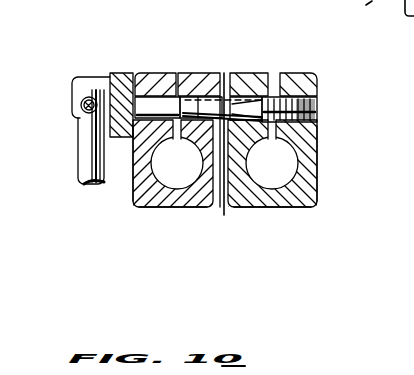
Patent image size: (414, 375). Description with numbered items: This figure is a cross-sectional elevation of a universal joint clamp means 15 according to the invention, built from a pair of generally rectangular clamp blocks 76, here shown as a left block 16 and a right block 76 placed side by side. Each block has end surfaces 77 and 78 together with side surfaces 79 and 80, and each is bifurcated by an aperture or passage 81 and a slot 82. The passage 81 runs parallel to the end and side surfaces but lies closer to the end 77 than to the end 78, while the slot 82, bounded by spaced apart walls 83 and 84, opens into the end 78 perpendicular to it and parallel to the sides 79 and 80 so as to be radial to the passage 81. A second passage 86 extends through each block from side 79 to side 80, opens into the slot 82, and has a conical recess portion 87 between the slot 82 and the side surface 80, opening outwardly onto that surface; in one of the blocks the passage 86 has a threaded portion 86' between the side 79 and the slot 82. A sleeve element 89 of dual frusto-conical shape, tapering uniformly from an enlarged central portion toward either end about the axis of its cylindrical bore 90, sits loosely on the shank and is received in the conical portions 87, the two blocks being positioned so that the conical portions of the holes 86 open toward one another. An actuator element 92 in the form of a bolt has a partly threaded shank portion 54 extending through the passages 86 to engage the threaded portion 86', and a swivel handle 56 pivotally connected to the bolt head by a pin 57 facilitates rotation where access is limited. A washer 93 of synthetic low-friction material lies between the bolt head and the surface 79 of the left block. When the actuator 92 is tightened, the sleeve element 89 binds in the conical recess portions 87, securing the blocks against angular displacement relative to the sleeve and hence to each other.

The clamp assembly 15 is at (216, 167).
The first clamp block 16 is at (138, 210).
The clamp block 76 is at (305, 140).
The end surface 77 is at (188, 206).
The side surface 79 is at (319, 168).
The side surface 80 is at (223, 208).
The passage 81 is at (224, 154).
The shank portion 54 is at (157, 107).
The cylindrical bore 90 is at (201, 107).
The swivel handle 56 is at (85, 163).
The pin 57 is at (87, 107).
The actuator element 92 is at (66, 92).
The washer 93 is at (132, 80).
The end surface 78 is at (160, 72).
The slot 82 is at (182, 74).
The slot wall 83 is at (279, 72).
The slot wall 84 is at (267, 97).
The passage 86 is at (232, 61).
The threaded portion 86' is at (331, 95).
The conical recess portion 87 is at (198, 96).
The sleeve element 89 is at (225, 122).